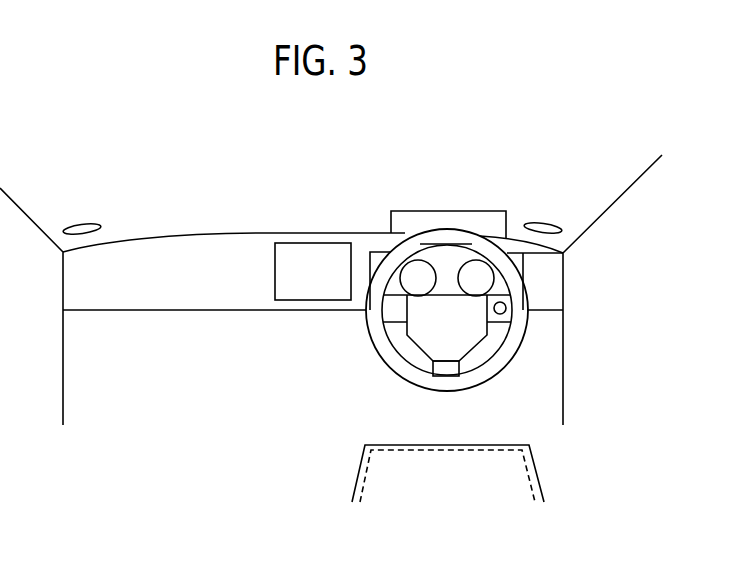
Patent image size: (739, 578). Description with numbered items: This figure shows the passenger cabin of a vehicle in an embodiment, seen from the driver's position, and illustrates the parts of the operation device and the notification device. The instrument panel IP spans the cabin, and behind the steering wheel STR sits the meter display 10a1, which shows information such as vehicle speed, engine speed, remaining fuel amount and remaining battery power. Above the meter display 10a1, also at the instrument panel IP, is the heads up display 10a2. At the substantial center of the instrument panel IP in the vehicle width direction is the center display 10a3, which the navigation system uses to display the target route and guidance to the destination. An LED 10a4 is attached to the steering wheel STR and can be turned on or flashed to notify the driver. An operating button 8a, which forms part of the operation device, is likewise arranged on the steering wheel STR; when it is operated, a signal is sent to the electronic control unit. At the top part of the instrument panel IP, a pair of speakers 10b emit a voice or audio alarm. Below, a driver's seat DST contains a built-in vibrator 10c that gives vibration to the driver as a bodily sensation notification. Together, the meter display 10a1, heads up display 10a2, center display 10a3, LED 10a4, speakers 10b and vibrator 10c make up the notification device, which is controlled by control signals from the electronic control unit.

The instrument panel IP is at (178, 254).
The speakers 10b is at (84, 223).
The meter display 10a1 is at (563, 253).
The heads up display 10a2 is at (408, 213).
The center display 10a3 is at (293, 251).
The LED 10a4 is at (389, 262).
The steering wheel STR is at (382, 358).
The operating button 8a is at (507, 307).
The driver's seat DST is at (533, 464).
The vibrator 10c is at (350, 462).